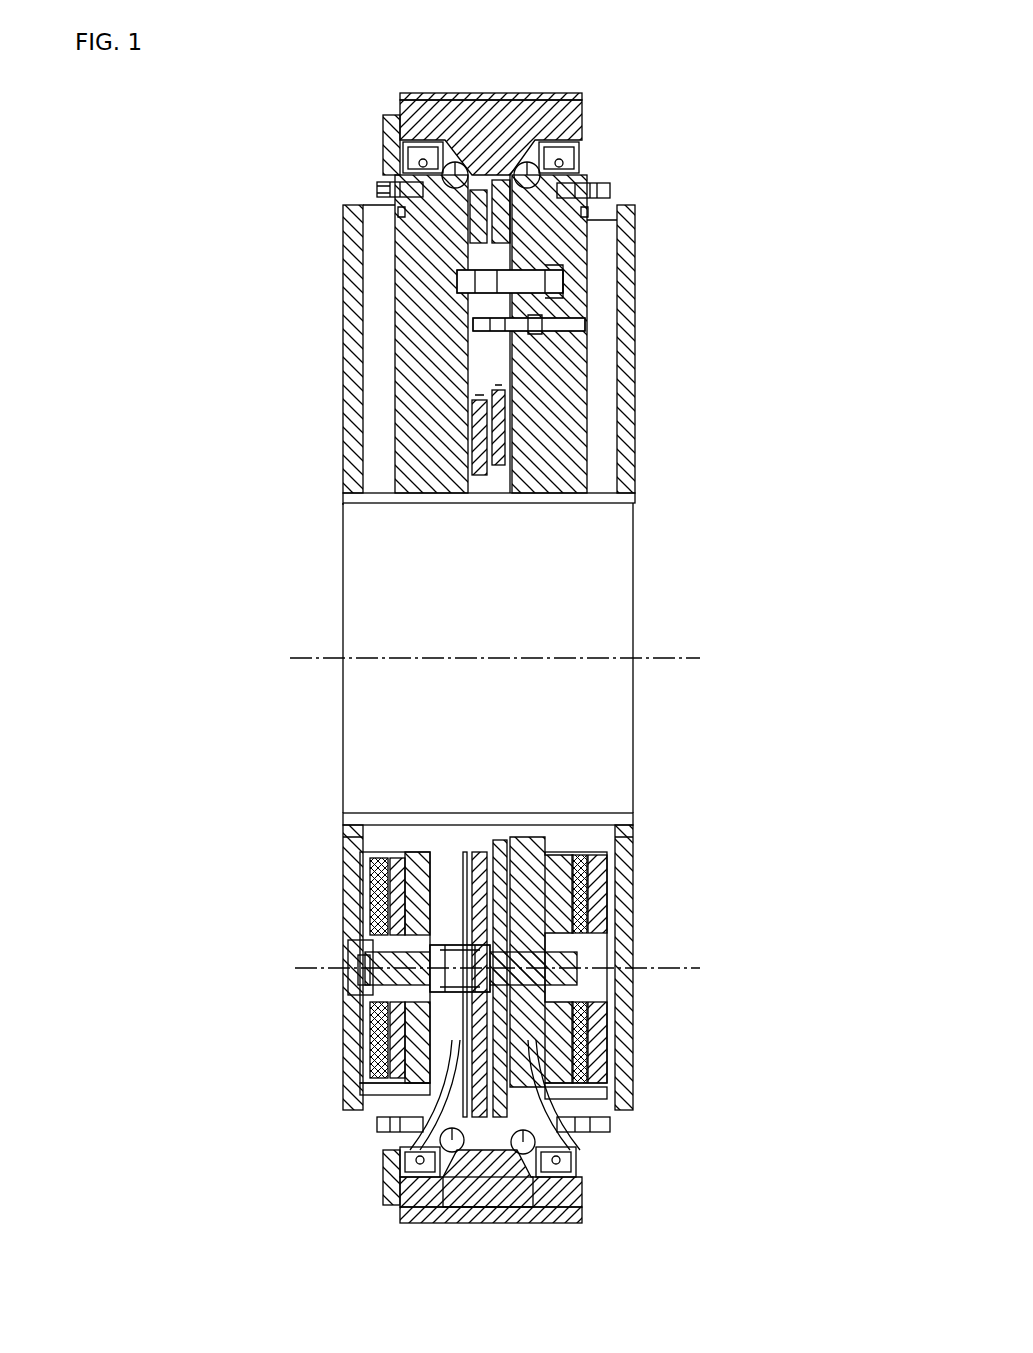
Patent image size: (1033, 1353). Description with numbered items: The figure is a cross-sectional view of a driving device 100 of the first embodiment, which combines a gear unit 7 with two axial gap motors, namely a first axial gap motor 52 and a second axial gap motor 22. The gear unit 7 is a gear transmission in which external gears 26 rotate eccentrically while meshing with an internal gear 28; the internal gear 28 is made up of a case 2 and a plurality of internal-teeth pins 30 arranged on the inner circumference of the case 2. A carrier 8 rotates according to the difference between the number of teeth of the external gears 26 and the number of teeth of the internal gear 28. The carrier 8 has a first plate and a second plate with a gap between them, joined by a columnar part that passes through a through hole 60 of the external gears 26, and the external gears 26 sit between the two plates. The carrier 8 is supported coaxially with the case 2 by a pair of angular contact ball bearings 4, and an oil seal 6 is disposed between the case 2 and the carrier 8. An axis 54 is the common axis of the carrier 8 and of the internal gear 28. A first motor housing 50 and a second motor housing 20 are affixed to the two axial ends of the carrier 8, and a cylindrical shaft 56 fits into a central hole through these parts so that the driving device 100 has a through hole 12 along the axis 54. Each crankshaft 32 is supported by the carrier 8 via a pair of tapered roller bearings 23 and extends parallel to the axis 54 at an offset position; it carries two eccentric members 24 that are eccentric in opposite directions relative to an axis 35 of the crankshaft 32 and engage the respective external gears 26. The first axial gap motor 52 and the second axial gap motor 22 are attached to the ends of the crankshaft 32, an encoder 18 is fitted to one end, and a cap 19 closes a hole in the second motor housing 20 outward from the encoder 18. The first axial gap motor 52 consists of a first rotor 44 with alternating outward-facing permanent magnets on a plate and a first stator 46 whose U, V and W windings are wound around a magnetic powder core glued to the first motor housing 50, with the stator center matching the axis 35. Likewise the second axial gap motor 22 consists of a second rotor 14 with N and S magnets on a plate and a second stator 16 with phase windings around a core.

The driving device 100 is at (663, 97).
The case 2 is at (496, 118).
The angular contact ball bearings 4 is at (458, 160).
The oil seal 6 is at (424, 148).
The gear unit 7 is at (388, 95).
The carrier 8 is at (430, 232).
The through hole 12 is at (327, 530).
The second rotor 14 is at (365, 870).
The second stator 16 is at (355, 922).
The encoder 18 is at (343, 967).
The cap 19 is at (348, 990).
The second motor housing 20 is at (362, 1090).
The second axial gap motor 22 is at (440, 1132).
The bearings 23 is at (375, 1105).
The eccentric members 24 is at (395, 1125).
The external gears 26 is at (432, 1205).
The internal gear 28 is at (460, 1200).
The internal-teeth pins 30 is at (497, 1200).
The crankshaft 32 is at (603, 1112).
The axis of the crankshaft 35 is at (665, 968).
The first rotor 44 is at (592, 898).
The first stator 46 is at (630, 867).
The first motor housing 50 is at (628, 846).
The first axial gap motor 52 is at (605, 822).
The axis 54 is at (690, 658).
The cylindrical shaft 56 is at (630, 497).
The through hole 60 is at (484, 395).